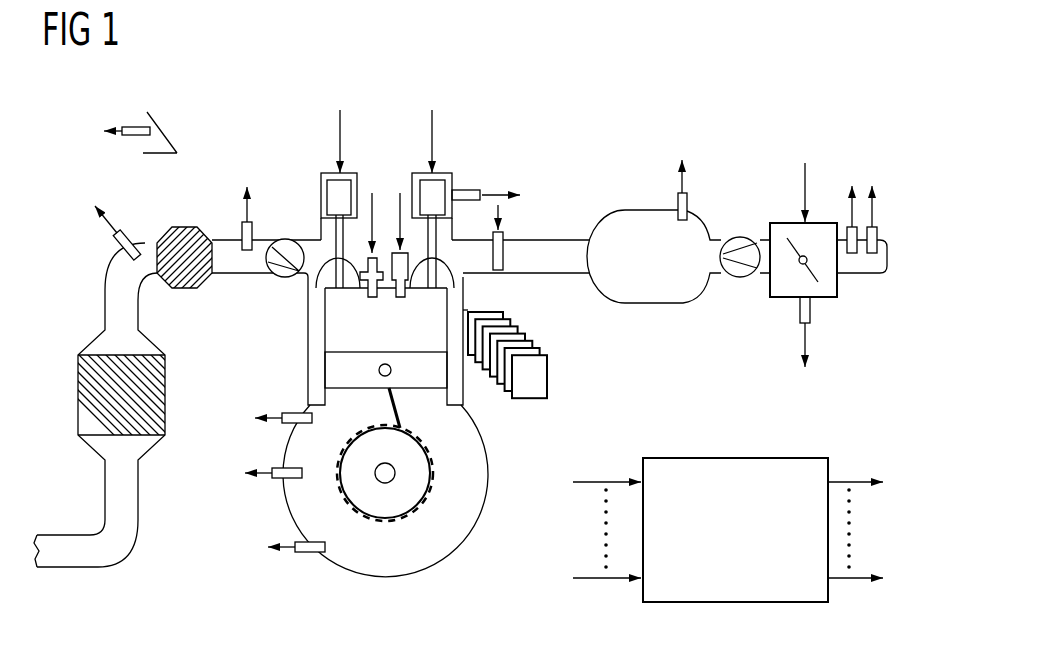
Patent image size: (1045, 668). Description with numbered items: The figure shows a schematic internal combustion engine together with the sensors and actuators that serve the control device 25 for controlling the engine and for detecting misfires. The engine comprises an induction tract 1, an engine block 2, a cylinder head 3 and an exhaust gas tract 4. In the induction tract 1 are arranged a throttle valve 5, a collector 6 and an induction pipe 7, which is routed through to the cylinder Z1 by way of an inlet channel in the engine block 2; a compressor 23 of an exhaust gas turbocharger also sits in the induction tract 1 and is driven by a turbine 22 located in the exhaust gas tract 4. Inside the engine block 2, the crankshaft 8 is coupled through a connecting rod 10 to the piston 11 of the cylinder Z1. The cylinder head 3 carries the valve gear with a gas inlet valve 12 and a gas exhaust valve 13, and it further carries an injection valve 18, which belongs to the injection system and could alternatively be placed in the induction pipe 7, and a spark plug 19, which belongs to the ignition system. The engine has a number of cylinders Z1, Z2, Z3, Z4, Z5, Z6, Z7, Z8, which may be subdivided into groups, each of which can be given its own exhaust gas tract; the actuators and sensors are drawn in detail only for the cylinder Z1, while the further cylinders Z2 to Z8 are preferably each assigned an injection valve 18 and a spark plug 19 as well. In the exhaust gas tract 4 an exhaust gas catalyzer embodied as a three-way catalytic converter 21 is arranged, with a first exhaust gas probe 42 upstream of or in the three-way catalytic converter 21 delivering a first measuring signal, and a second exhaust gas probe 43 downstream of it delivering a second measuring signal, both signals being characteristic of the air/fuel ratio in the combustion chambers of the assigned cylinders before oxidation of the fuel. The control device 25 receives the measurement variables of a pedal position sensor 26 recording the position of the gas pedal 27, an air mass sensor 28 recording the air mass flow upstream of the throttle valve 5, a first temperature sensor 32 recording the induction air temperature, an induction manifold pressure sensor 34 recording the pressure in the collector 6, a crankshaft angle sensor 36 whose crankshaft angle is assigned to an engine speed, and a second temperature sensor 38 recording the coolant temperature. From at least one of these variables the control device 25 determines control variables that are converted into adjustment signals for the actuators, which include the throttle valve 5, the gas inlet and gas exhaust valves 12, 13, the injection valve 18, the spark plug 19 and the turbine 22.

The induction tract 1 is at (686, 334).
The engine block 2 is at (296, 328).
The cylinder head 3 is at (455, 137).
The exhaust gas tract 4 is at (104, 257).
The throttle valve 5 is at (790, 230).
The collector 6 is at (693, 293).
The induction pipe 7 is at (566, 246).
The crankshaft 8 is at (397, 473).
The connecting rod 10 is at (392, 414).
The piston 11 is at (418, 381).
The gas inlet valve 12 is at (432, 296).
The gas exhaust valve 13 is at (320, 295).
The injection valve 18 is at (400, 298).
The spark plug 19 is at (372, 298).
The three-way catalytic converter 21 is at (181, 289).
The turbine 22 is at (286, 239).
The compressor 23 is at (740, 237).
The control device 25 is at (760, 468).
The pedal position sensor 26 is at (131, 127).
The gas pedal 27 is at (163, 133).
The air mass sensor 28 is at (851, 226).
The first temperature sensor 32 is at (878, 232).
The induction manifold pressure sensor 34 is at (678, 205).
The crankshaft angle sensor 36 is at (280, 480).
The second temperature sensor 38 is at (285, 420).
The first exhaust gas probe 42 is at (241, 228).
The second exhaust gas probe 43 is at (129, 234).
The cylinder Z1 is at (308, 368).
The cylinder Z2 is at (493, 312).
The cylinder Z3 is at (505, 320).
The cylinder Z4 is at (513, 327).
The cylinder Z5 is at (492, 377).
The cylinder Z6 is at (532, 346).
The cylinder Z7 is at (508, 392).
The cylinder Z8 is at (536, 392).